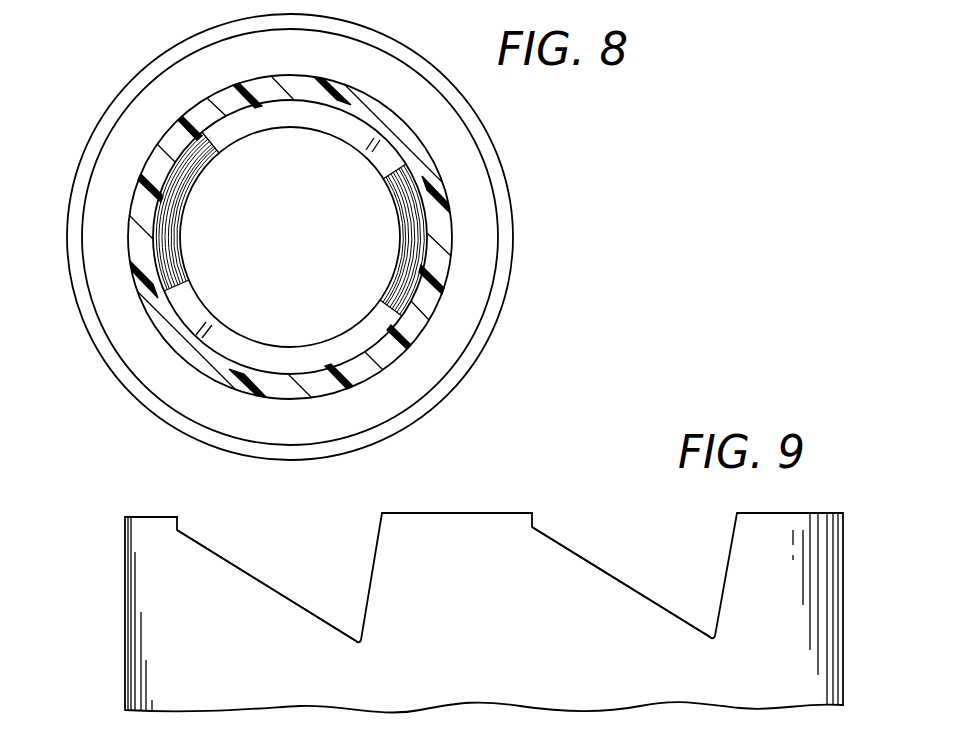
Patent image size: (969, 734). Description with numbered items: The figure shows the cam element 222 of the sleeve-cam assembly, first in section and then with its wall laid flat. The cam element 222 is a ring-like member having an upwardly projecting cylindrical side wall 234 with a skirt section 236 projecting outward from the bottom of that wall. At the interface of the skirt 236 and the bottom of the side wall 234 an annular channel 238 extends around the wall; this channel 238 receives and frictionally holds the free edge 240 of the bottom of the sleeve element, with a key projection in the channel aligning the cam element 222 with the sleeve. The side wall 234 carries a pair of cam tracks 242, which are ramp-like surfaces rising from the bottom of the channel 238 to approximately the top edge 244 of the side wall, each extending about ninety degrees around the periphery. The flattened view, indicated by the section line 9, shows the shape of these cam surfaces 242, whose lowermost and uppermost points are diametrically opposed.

In FIG. 8, the section line 9- 9 is at (197, 183).
In FIG. 9, the section line 9- 9 is at (124, 563).
In FIG. 8, the cam element 222 is at (470, 197).
In FIG. 9, the cylindrical side wall 234 is at (563, 576).
In FIG. 8, the skirt section 236 is at (507, 254).
In FIG. 8, the annular channel 238 is at (405, 352).
In FIG. 8, the free edge 240 is at (434, 293).
In FIG. 8, the cam tracks 242 is at (336, 128).
In FIG. 9, the cam tracks 242 is at (262, 580).
In FIG. 8, the top edge 244 is at (183, 276).
In FIG. 9, the top edge 244 is at (160, 516).